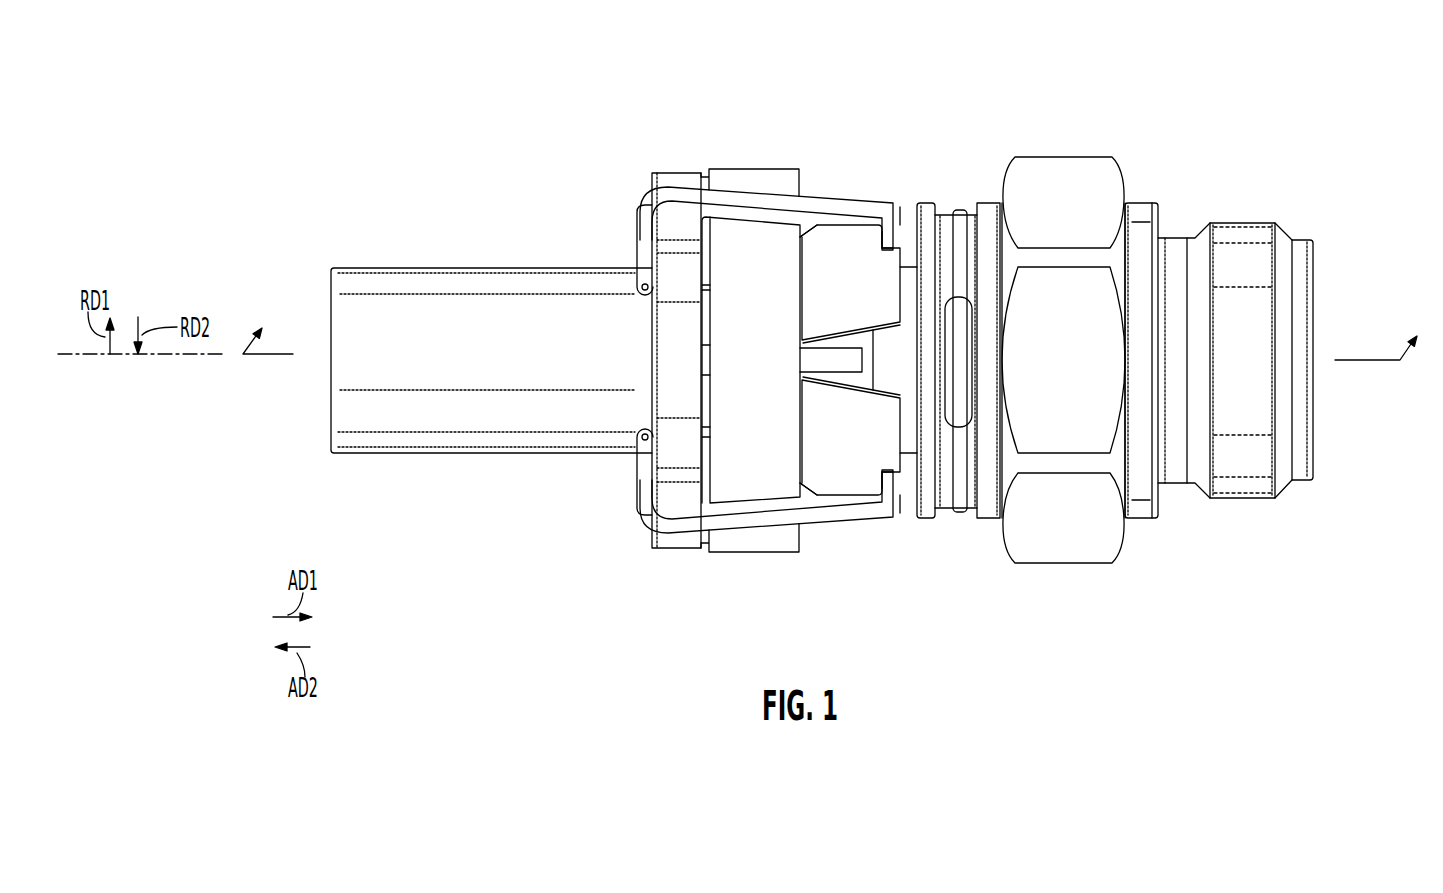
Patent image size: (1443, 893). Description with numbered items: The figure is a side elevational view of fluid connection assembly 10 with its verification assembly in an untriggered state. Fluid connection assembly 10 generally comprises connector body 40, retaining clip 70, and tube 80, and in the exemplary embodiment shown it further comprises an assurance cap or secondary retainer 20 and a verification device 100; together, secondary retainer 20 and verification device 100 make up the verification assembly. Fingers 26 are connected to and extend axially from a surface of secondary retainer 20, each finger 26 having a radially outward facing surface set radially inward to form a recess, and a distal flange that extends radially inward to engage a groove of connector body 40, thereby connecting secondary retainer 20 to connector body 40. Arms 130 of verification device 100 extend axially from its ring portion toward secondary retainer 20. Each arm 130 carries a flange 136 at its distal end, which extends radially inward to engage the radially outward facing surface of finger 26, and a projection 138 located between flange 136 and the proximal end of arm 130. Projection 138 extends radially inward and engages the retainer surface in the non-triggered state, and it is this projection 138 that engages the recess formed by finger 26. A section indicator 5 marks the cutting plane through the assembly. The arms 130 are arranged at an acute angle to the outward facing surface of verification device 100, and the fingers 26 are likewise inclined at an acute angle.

The section line 5- 5 is at (835, 326).
The fluid connection assembly 10 is at (455, 116).
The secondary retainer 20 is at (763, 543).
The finger 26 is at (848, 478).
The connector body 40 is at (1090, 172).
The retaining clip 70 is at (962, 213).
The tube 80 is at (383, 415).
The verification device 100 is at (668, 273).
The arm 130 is at (765, 202).
The flange 136 is at (890, 242).
The projection 138 is at (805, 225).